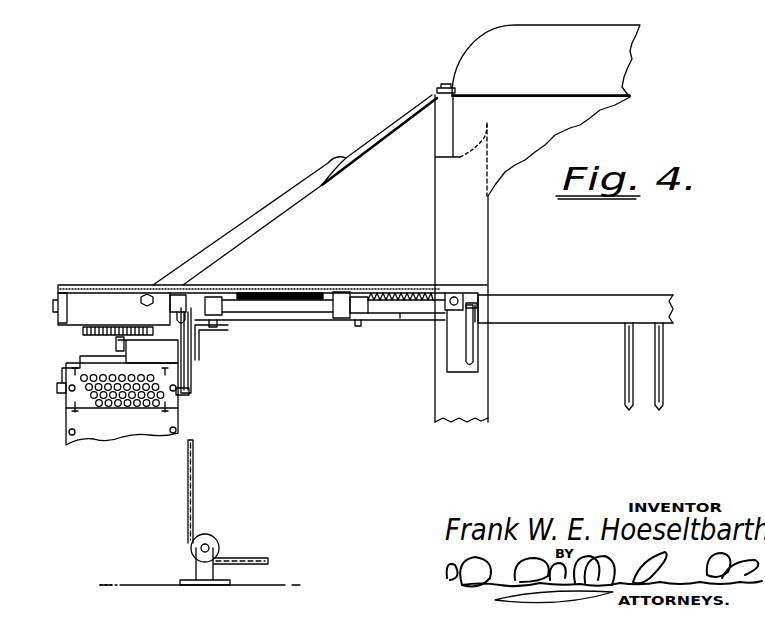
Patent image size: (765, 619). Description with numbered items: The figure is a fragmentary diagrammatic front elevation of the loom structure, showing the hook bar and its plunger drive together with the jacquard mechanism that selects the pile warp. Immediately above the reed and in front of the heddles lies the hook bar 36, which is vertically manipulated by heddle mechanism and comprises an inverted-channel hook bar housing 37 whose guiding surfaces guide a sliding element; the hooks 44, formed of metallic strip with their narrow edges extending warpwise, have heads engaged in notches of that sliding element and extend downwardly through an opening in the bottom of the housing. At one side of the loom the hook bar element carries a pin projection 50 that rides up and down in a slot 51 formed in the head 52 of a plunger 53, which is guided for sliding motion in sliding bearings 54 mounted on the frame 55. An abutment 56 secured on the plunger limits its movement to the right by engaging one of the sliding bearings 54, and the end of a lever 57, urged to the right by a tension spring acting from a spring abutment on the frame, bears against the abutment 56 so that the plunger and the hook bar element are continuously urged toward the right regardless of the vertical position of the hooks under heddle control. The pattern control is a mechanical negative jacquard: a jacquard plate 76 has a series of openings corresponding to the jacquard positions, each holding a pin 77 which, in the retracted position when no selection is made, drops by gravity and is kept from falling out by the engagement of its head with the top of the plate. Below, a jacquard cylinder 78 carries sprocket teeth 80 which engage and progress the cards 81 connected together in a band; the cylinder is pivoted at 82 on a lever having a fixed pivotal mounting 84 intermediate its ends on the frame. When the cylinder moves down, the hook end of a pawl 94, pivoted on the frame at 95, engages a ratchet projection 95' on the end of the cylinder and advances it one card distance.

The hook bar 36 is at (572, 306).
The hook bar housing 37 is at (646, 300).
The hooks 44 is at (627, 379).
The pin projection 50 is at (472, 303).
The slot 51 is at (474, 353).
The head 52 is at (452, 363).
The plunger 53 is at (396, 306).
The sliding bearings 54 is at (215, 309).
The frame 55 is at (285, 317).
The abutment 56 is at (343, 294).
The lever 57 is at (310, 294).
The jacquard plate 76 is at (86, 313).
The pin 77 is at (83, 330).
The jacquard cylinder 78 is at (131, 399).
The sprocket teeth 80 is at (70, 391).
The cards 81 is at (88, 411).
The pivot 82 is at (58, 392).
The fixed pivotal mounting 84 is at (118, 345).
The pawl 94 is at (192, 377).
The pivot 95 is at (157, 311).
The ratchet projection 95' is at (216, 401).